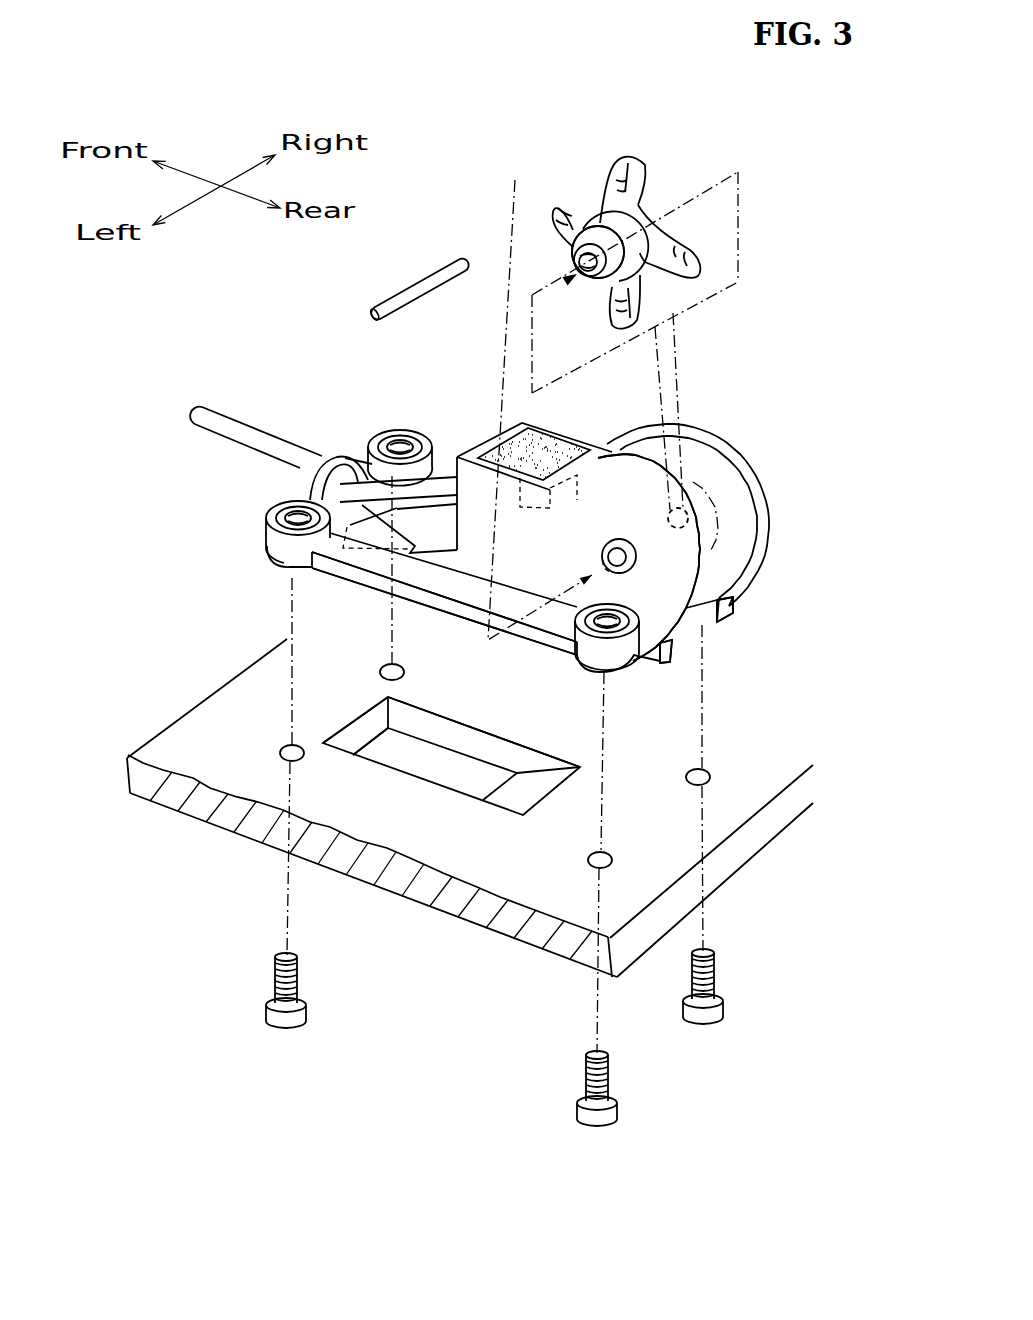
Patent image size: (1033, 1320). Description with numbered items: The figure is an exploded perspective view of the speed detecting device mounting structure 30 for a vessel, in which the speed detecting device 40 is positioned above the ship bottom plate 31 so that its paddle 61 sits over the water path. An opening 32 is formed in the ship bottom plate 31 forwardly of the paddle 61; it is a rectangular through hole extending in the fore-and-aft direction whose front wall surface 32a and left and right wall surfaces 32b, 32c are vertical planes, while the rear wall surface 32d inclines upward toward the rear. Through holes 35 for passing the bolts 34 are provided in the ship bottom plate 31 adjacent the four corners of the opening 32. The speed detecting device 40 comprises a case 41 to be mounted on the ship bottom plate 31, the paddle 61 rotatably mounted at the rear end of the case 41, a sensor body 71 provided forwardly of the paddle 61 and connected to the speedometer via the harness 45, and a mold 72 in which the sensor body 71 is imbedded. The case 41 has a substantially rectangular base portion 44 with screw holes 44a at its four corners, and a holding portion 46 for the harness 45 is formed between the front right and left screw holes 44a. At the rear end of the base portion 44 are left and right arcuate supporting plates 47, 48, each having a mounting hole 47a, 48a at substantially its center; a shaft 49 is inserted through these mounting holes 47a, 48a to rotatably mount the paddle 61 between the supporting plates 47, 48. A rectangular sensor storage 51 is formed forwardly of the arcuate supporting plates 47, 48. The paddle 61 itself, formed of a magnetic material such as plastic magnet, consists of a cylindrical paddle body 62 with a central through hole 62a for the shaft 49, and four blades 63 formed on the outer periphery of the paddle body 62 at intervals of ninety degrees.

The speed detecting device mounting structure 30 is at (515, 180).
The ship bottom plate 31 is at (195, 730).
The opening 32 is at (340, 729).
The front wall surface 32a is at (357, 735).
The left wall surface 32b is at (445, 780).
The right wall surface 32c is at (467, 740).
The rear wall surface 32d is at (530, 790).
The bolt 34 is at (270, 980).
The through hole 35 is at (390, 682).
The speed detecting device 40 is at (754, 444).
The case 41 is at (727, 434).
The base portion 44 is at (480, 592).
The screw hole 44a is at (393, 433).
The harness 45 is at (222, 427).
The holding portion 46 is at (282, 466).
The left arcuate supporting plate 47 is at (668, 617).
The mounting hole 47a is at (735, 615).
The right arcuate supporting plate 48 is at (758, 513).
The mounting hole 48a is at (747, 468).
The shaft 49 is at (392, 303).
The sensor storage 51 is at (397, 602).
The paddle 61 is at (632, 148).
The paddle body 62 is at (653, 218).
The through hole 62a is at (597, 282).
The blade 63 is at (575, 205).
The sensor body 71 is at (490, 433).
The mold 72 is at (540, 432).